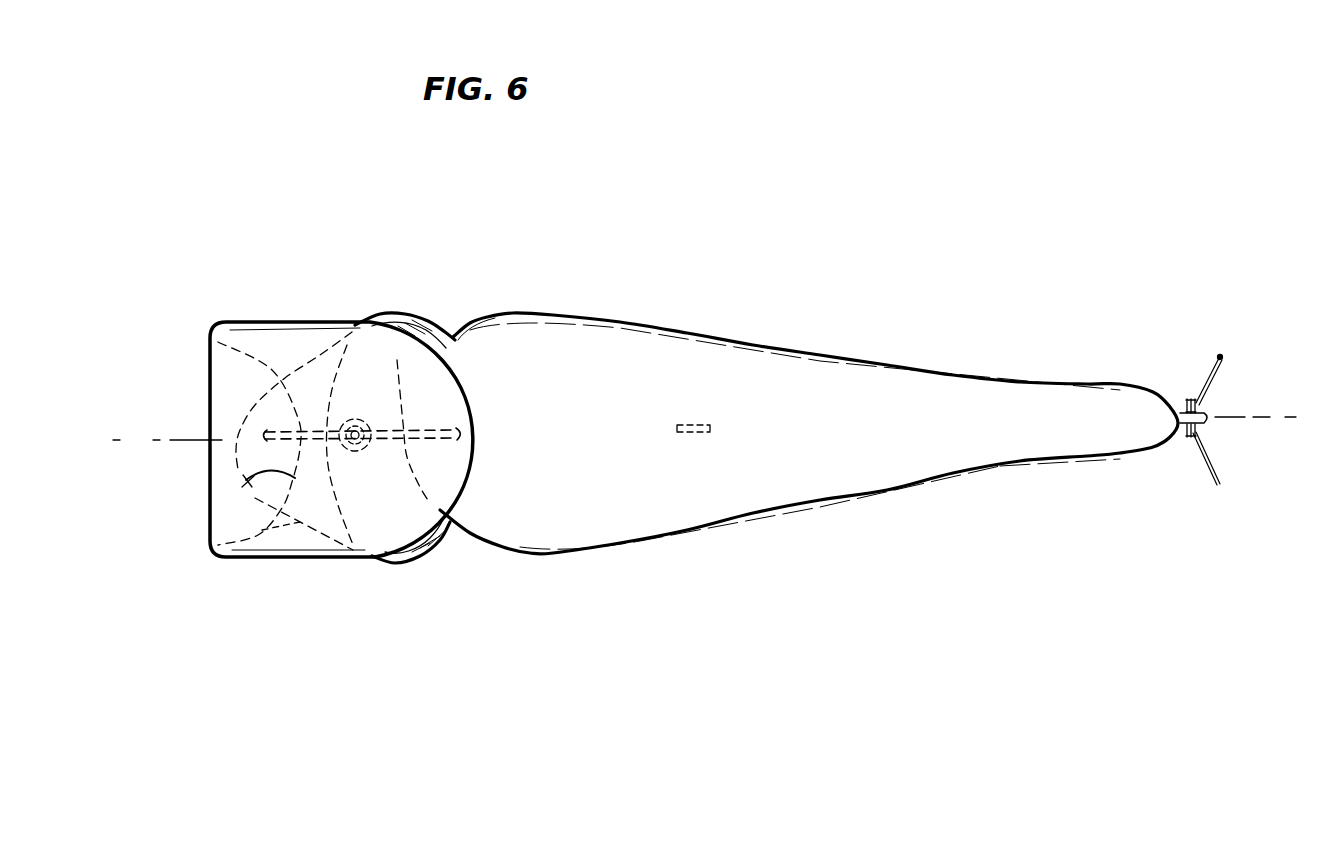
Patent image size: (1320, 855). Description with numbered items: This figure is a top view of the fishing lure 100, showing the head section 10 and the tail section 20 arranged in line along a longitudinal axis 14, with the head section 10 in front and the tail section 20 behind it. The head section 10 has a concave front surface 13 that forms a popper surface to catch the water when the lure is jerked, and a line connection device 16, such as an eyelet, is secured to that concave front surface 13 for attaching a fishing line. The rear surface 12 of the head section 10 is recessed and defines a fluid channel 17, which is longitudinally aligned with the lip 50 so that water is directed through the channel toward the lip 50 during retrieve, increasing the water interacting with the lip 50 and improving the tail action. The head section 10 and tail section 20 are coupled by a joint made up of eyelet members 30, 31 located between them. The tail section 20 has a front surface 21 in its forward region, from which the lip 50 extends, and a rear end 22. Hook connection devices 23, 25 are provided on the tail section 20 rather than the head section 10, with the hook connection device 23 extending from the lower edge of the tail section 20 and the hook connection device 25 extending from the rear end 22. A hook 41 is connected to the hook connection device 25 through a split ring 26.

The fishing lure 100 is at (1091, 176).
The head section 10 is at (293, 319).
The rear surface 12 is at (372, 345).
The front surface 13 is at (250, 482).
The longitudinal axis 14 is at (126, 444).
The line connection device 16 is at (268, 432).
The fluid channel 17 is at (314, 530).
The tail section 20 is at (788, 341).
The front surface 21 is at (465, 362).
The rear end 22 is at (1127, 425).
The hook connection device 23 is at (700, 437).
The hook connection device 25 is at (1186, 437).
The split ring 26 is at (1188, 400).
The eyelet member 30 is at (366, 446).
The eyelet member 31 is at (462, 428).
The hook 41 is at (1220, 352).
The lip 50 is at (420, 563).